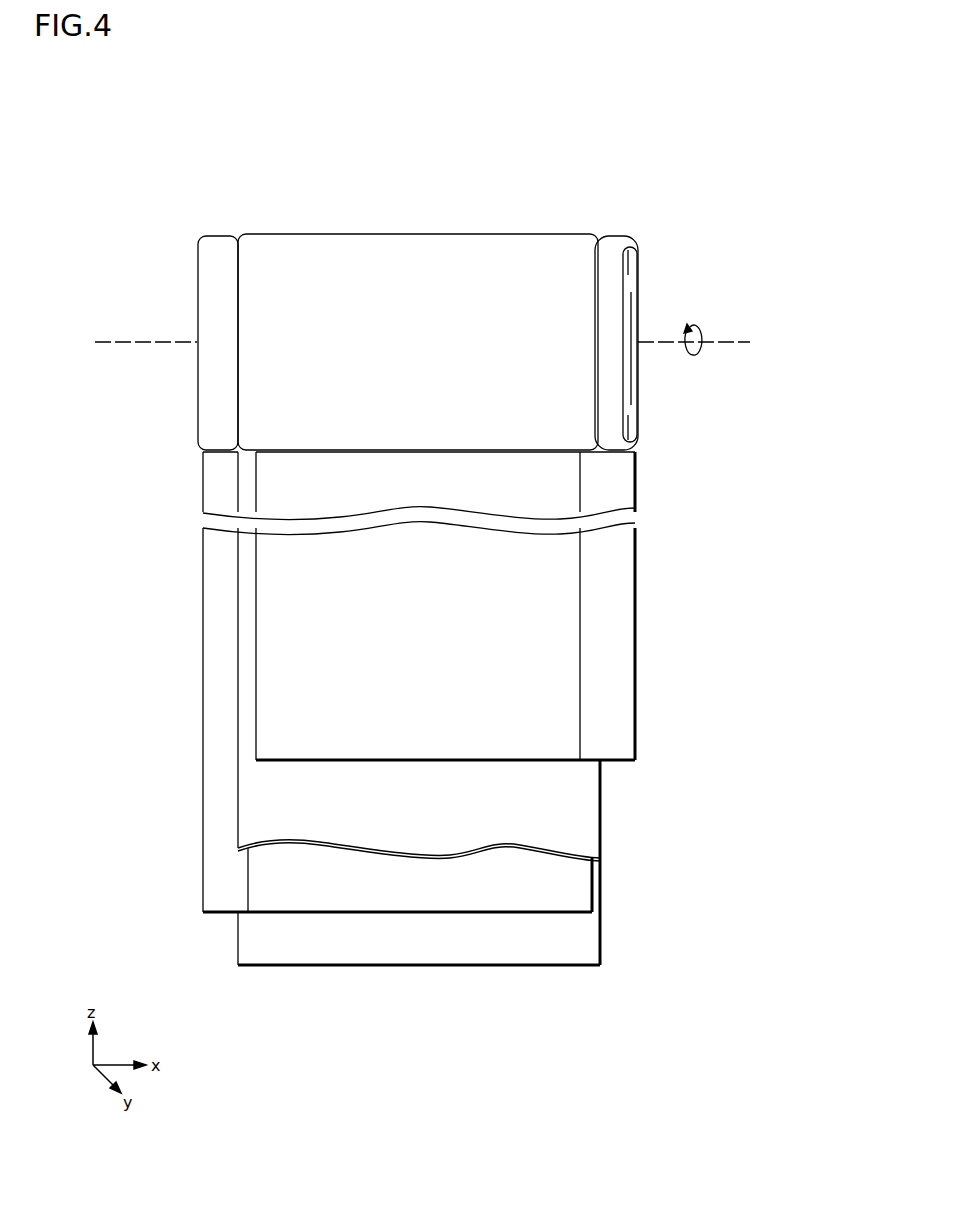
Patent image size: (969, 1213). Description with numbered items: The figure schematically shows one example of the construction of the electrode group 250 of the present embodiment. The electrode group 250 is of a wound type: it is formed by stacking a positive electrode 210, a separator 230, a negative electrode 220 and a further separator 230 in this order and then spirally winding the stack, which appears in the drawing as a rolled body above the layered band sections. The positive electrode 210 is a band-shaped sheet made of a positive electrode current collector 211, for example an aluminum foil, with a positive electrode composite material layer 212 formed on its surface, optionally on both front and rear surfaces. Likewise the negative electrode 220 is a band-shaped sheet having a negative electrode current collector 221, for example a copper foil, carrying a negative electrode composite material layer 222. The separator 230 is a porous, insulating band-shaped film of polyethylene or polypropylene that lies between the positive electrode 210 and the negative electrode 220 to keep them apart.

The electrode group 250 is at (661, 178).
The positive electrode 210 is at (507, 606).
The positive electrode current collector 211 is at (620, 635).
The positive electrode composite material layer 212 is at (572, 584).
The negative electrode 220 is at (307, 682).
The negative electrode current collector 221 is at (203, 815).
The negative electrode composite material layer 222 is at (290, 890).
The separator 230 is at (600, 820).